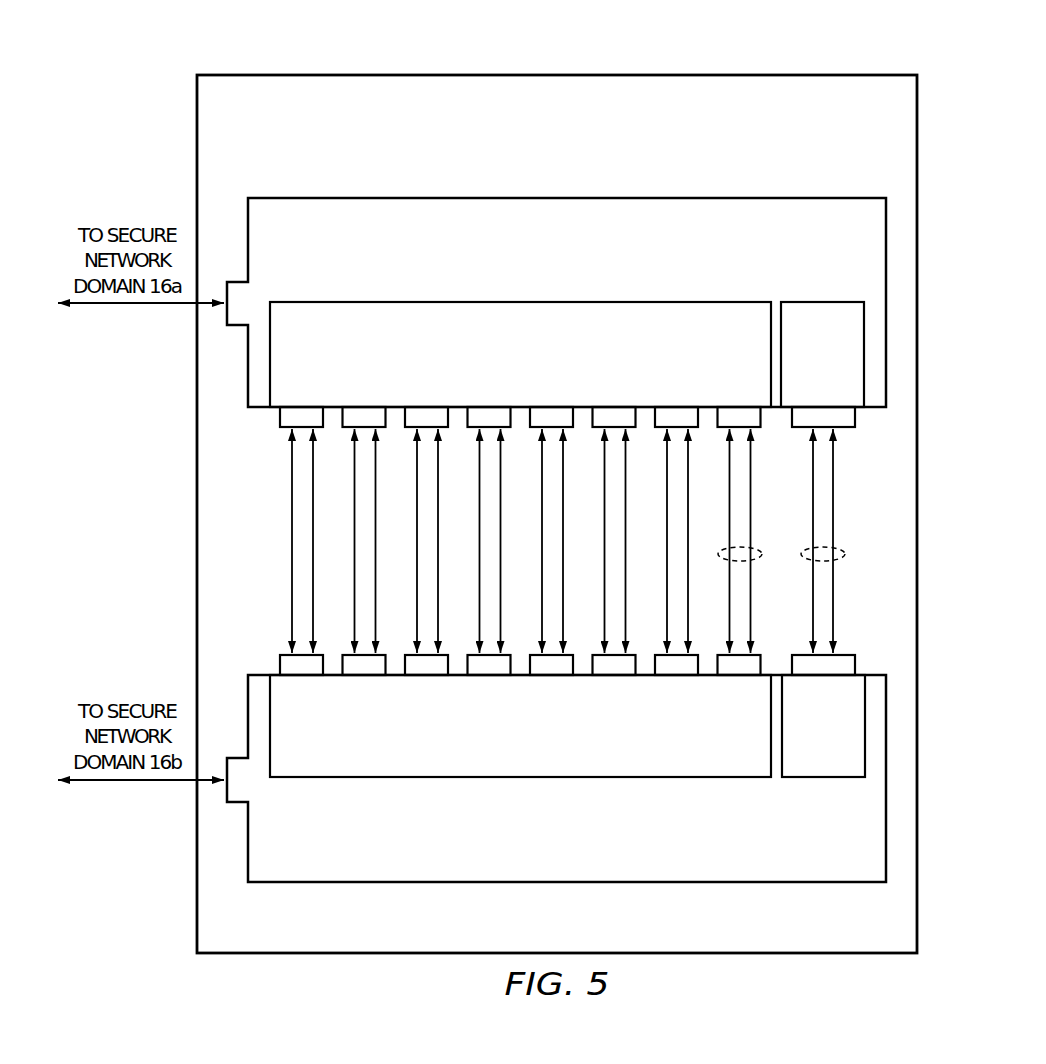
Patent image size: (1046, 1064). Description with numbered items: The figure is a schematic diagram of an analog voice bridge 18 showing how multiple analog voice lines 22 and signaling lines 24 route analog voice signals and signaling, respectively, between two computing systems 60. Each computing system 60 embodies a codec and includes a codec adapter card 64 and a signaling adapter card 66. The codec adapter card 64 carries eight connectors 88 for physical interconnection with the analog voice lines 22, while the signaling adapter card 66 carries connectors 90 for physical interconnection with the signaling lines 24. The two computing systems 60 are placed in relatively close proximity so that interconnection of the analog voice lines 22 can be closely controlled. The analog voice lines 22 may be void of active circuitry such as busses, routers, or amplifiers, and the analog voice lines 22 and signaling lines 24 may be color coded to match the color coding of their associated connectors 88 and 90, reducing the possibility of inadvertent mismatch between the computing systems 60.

The analog voice bridge 18 is at (342, 73).
The computing system 60 is at (750, 196).
The codec adapter card 64 is at (658, 300).
The signaling adapter card 66 is at (835, 300).
The connectors 88 is at (313, 405).
The connectors 90 is at (857, 420).
The analog voice lines 22 is at (312, 542).
The signaling lines 24 is at (843, 552).